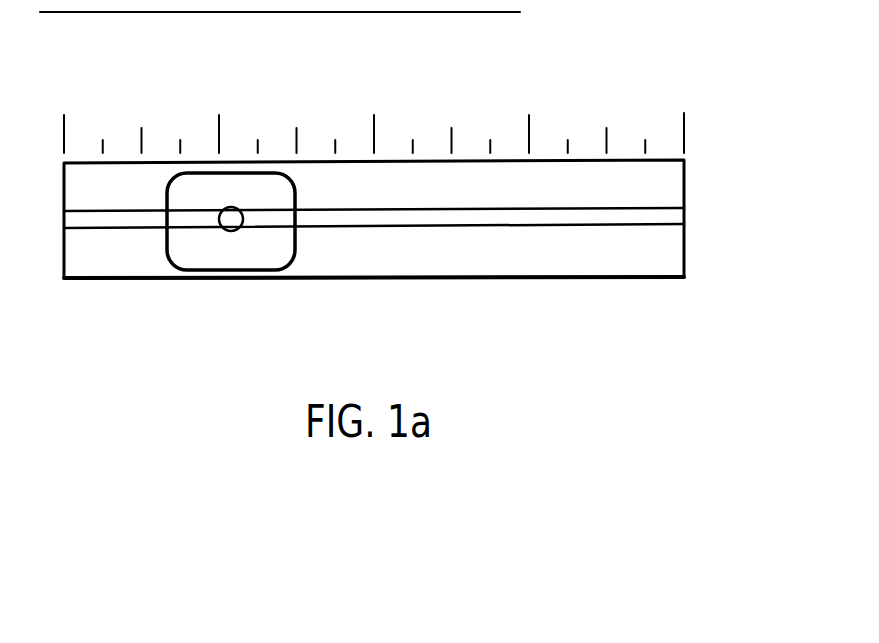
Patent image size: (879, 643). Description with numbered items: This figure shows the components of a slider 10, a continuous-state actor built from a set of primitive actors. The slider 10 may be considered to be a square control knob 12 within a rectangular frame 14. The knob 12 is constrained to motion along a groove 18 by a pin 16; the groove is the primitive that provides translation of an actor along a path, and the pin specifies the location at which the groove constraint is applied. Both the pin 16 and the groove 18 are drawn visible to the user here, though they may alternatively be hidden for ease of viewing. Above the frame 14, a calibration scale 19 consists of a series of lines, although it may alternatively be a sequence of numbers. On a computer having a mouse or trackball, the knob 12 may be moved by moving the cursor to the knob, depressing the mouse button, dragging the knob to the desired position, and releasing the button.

The slider 10 is at (703, 213).
The square control knob 12 is at (273, 257).
The rectangular frame 14 is at (90, 270).
The pin 16 is at (228, 226).
The groove 18 is at (552, 214).
The calibration scale 19 is at (534, 120).